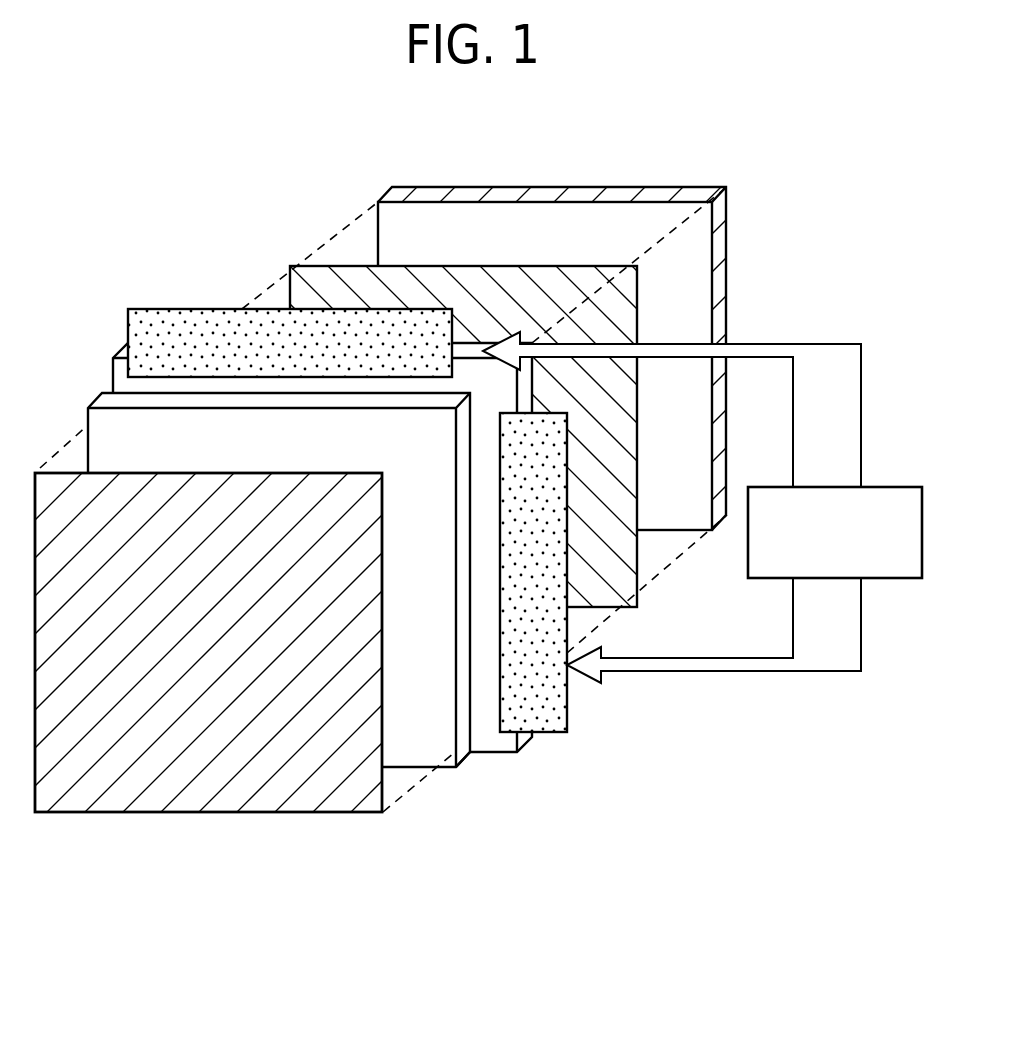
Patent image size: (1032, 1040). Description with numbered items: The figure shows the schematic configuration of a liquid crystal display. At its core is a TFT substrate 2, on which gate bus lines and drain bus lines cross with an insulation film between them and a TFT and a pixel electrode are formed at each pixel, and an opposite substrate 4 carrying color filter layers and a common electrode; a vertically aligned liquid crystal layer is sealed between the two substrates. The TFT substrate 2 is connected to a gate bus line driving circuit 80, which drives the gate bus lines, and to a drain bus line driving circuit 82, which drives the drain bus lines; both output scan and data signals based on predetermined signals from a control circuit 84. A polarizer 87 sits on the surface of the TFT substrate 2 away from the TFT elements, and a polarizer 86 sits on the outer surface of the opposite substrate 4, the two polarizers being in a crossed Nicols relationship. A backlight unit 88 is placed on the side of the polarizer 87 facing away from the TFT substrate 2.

The TFT substrate 2 is at (493, 755).
The opposite substrate 4 is at (447, 770).
The gate bus line driving circuit 80 is at (567, 713).
The drain bus line driving circuit 82 is at (183, 317).
The control circuit 84 is at (903, 487).
The polarizer 86 is at (223, 800).
The polarizer 87 is at (626, 584).
The backlight unit 88 is at (720, 242).